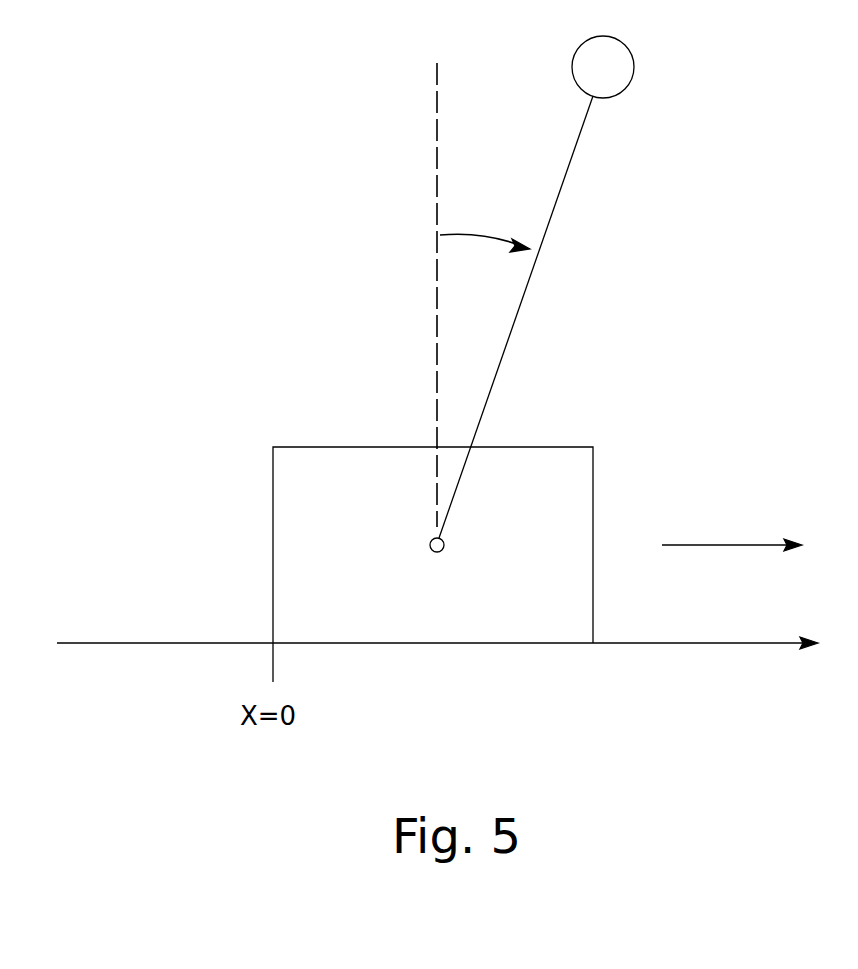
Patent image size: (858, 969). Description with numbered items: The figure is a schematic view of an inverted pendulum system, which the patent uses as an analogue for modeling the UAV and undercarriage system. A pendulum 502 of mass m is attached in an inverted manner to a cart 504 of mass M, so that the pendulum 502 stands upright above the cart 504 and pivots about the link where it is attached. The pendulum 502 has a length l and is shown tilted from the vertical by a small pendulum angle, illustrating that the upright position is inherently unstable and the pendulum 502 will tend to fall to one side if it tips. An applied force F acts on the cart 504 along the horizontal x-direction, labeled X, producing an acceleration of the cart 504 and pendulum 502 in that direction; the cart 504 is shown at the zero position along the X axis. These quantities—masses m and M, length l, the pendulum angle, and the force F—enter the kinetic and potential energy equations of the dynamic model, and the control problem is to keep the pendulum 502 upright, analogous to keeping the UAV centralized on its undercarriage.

The pendulum 502 is at (560, 284).
The cart 504 is at (377, 564).
The pendulum mass m is at (624, 64).
The cart mass M is at (345, 514).
The pendulum length l is at (516, 317).
The applied force F is at (732, 520).
The x-direction X is at (437, 670).